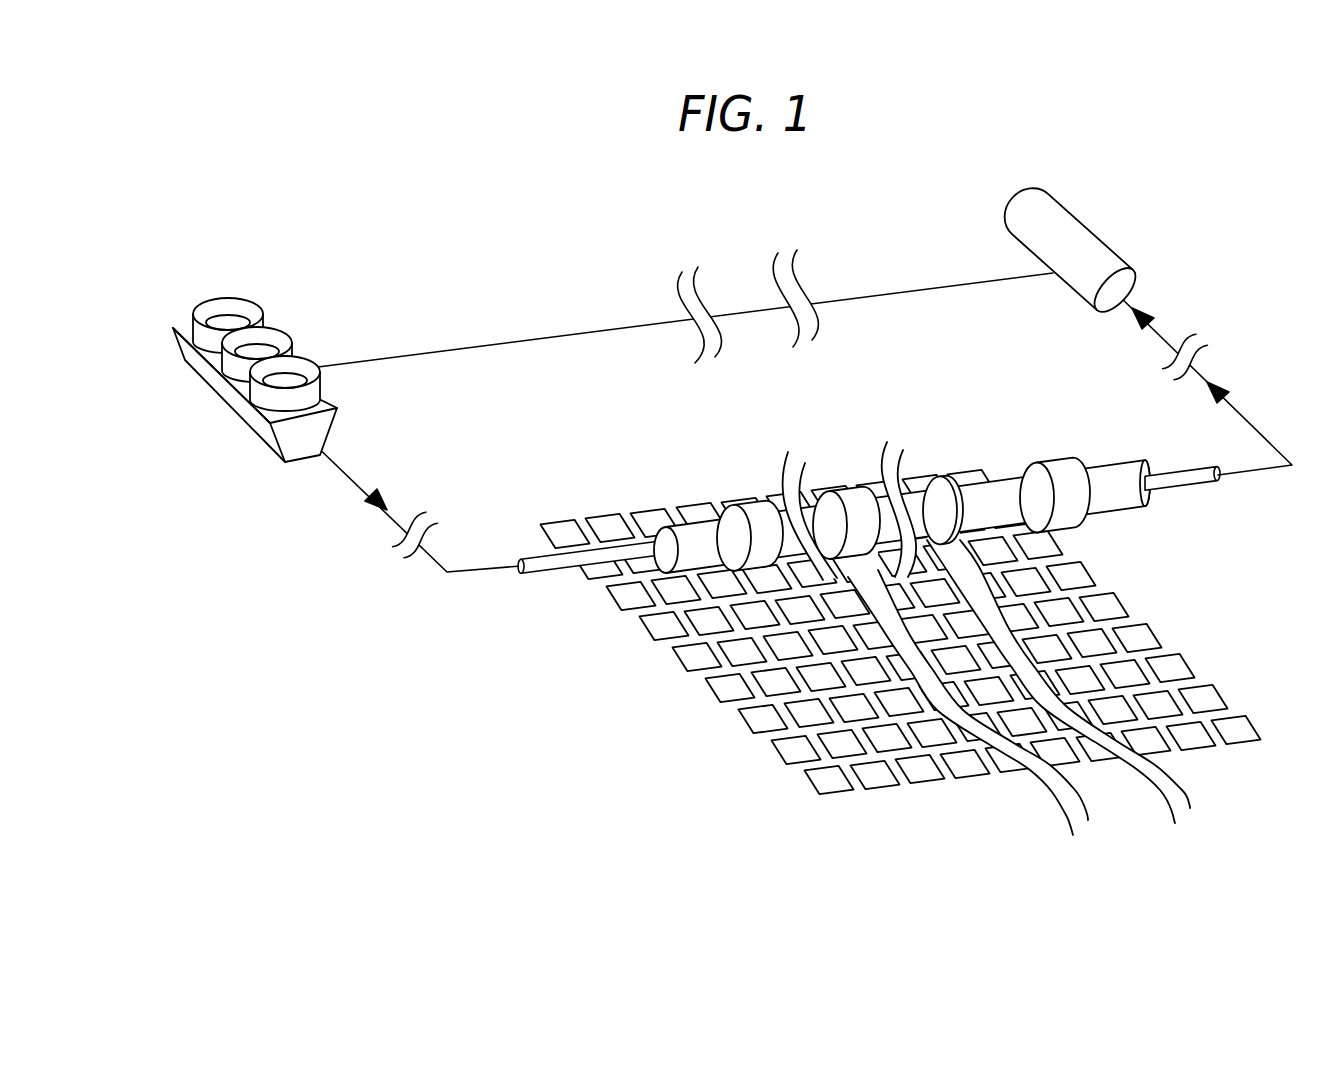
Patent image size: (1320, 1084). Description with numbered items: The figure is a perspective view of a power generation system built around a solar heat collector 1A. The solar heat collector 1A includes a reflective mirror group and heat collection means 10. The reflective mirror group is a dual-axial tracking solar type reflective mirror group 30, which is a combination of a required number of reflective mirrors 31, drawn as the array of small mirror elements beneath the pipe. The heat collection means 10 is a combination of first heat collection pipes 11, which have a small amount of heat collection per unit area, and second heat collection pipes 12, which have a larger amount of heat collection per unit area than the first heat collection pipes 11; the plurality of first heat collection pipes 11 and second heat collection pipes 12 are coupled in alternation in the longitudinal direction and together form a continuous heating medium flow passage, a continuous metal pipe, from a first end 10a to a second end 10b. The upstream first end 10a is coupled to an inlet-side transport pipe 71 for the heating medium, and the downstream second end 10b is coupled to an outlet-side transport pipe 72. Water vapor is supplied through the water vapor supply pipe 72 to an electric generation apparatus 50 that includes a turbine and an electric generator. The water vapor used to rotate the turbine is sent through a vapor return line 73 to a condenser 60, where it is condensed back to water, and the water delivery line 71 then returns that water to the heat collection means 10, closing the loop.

The solar heat collector 1A is at (915, 463).
The heat collection means 10 is at (915, 463).
The first end 10a is at (663, 538).
The second end 10b is at (1150, 463).
The first heat collection pipes 11 is at (915, 477).
The second heat collection pipes 12 is at (850, 500).
The dual-axial tracking solar type reflective mirror group 30 is at (903, 671).
The reflective mirrors 31 is at (630, 604).
The electric generation apparatus 50 is at (1082, 226).
The condenser 60 is at (238, 404).
The inlet-side transport pipe 71 is at (392, 520).
The outlet-side transport pipe 72 is at (1165, 338).
The vapor return line 73 is at (482, 346).